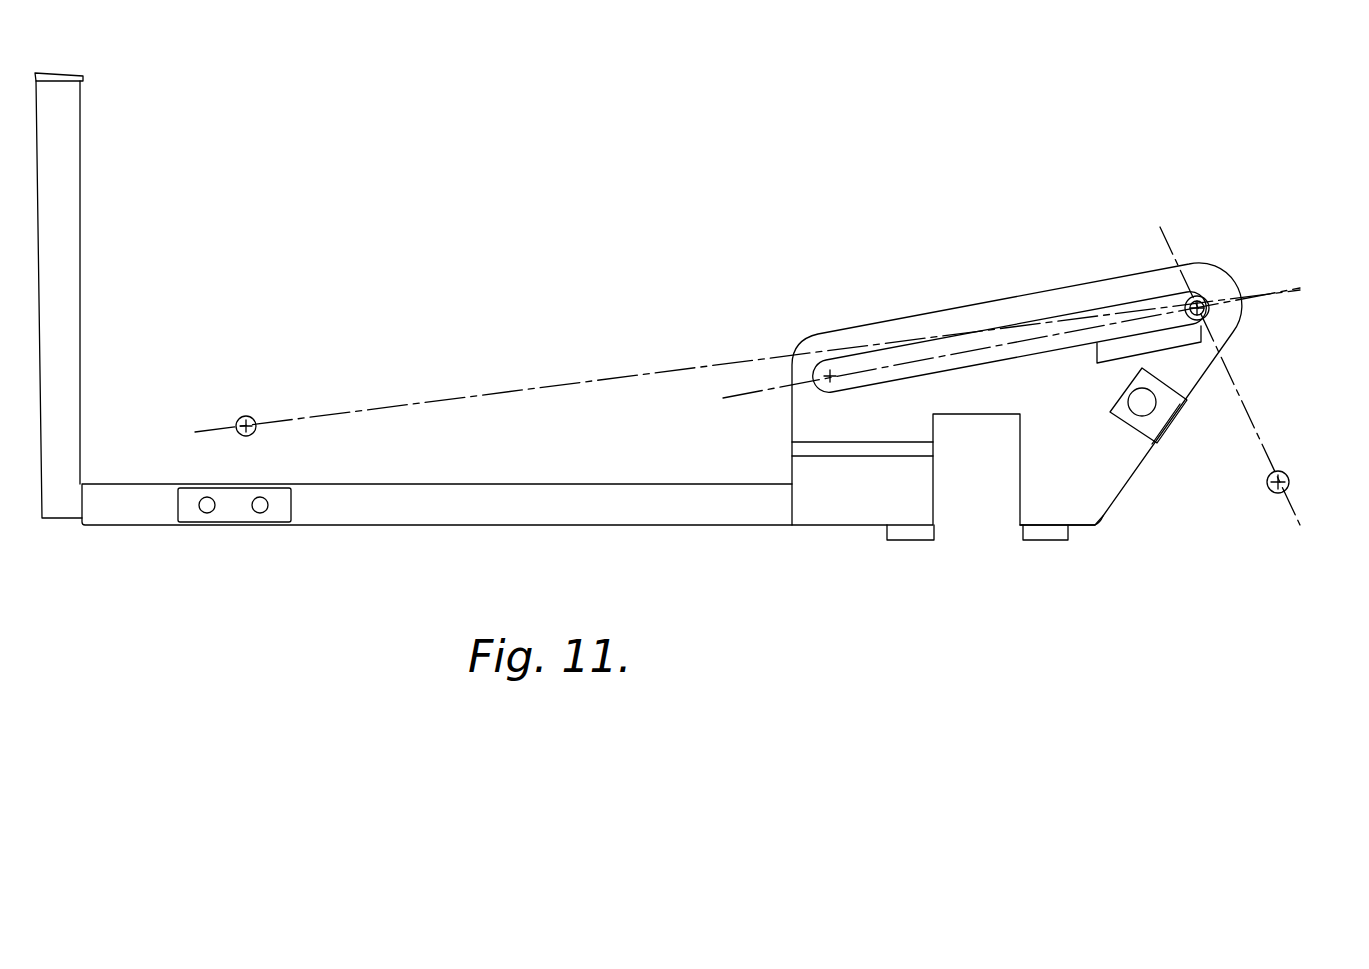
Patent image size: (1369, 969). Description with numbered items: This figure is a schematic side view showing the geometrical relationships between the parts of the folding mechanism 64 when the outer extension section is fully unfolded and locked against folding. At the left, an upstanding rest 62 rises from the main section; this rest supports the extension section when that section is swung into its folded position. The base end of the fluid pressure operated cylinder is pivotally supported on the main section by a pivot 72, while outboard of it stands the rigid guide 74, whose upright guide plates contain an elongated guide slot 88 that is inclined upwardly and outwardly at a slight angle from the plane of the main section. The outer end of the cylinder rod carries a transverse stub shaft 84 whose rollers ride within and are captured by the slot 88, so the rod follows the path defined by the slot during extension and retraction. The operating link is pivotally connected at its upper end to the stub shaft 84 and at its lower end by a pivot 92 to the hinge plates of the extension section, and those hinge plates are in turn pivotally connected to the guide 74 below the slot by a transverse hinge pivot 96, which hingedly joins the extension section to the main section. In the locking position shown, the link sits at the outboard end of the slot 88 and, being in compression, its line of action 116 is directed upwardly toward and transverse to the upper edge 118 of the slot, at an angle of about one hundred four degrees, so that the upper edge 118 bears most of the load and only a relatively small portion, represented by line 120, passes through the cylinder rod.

The upstanding rest 62 is at (68, 155).
The mechanism 64 is at (977, 238).
The pivot 72 is at (244, 417).
The rigid guide 74 is at (1108, 514).
The transverse stub shaft 84 is at (1210, 300).
The elongated guide slot 88 is at (898, 357).
The pivot 92 is at (1290, 475).
The transverse hinge pivot 96 is at (1145, 400).
The line of action 116 is at (1163, 235).
The upper edge 118 is at (1117, 306).
The line 120 is at (567, 386).